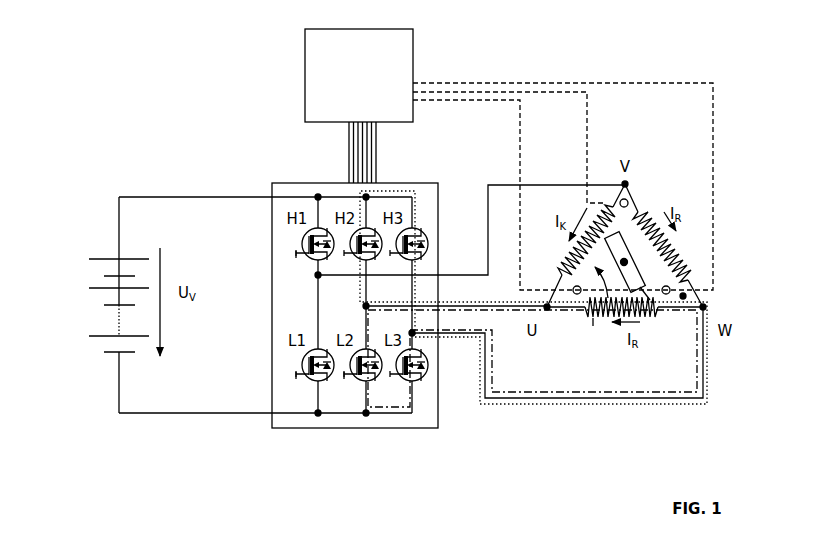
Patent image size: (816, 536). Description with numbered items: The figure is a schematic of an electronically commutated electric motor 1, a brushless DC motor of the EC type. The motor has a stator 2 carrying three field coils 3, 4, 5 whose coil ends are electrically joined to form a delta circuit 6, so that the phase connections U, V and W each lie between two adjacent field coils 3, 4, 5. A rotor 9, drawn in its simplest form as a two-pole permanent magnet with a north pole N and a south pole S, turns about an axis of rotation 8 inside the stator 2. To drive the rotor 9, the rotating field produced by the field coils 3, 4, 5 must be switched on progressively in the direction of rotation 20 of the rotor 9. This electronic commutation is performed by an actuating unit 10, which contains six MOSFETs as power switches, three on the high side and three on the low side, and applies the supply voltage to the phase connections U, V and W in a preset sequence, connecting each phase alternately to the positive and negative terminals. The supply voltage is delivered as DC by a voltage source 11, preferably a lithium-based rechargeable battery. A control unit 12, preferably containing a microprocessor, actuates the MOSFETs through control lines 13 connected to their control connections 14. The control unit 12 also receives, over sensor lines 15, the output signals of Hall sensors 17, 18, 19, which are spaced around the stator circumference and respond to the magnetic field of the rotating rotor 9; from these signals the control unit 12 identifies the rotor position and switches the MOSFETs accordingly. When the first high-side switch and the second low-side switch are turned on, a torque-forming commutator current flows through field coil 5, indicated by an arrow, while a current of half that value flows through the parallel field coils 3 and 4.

The electronically commutated electric motor 1 is at (663, 137).
The stator 2 is at (683, 296).
The field coil 3 is at (655, 215).
The field coil 4 is at (603, 314).
The field coil 5 is at (572, 263).
The delta circuit 6 is at (684, 250).
The axis of rotation 8 is at (624, 262).
The rotor 9 is at (650, 300).
The actuating unit 10 is at (280, 188).
The voltage source 11 is at (110, 296).
The control unit 12 is at (349, 81).
The control lines 13 is at (360, 160).
The control connections 14 is at (302, 254).
The sensor lines 15 is at (495, 88).
The Hall sensor 17 is at (630, 199).
The Hall sensor 18 is at (668, 295).
The Hall sensor 19 is at (575, 295).
The direction of rotation 20 is at (593, 326).